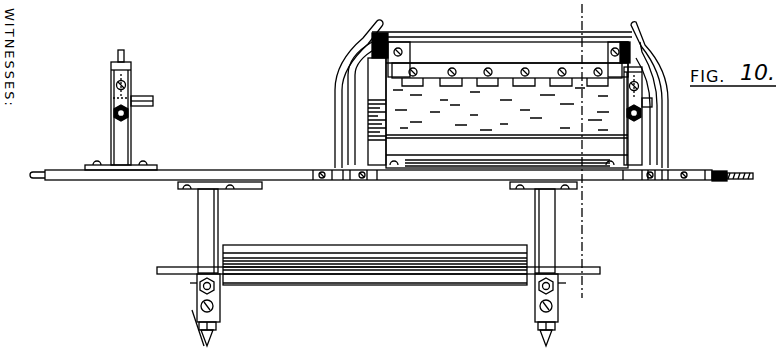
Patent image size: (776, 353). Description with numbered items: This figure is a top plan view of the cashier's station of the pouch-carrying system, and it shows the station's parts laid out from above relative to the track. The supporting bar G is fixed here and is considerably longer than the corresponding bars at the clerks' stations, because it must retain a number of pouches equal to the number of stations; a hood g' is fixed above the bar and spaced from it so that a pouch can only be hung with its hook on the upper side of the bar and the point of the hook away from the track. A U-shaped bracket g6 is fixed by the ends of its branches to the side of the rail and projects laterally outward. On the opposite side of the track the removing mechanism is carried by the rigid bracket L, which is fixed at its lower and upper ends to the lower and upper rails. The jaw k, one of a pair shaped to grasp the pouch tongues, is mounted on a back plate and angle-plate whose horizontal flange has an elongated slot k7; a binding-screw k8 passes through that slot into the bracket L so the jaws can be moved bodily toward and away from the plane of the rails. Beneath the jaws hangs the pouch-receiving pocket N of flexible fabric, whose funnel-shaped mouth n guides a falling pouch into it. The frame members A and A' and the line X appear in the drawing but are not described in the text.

The bed A is at (397, 162).
The bracket plate A' is at (377, 192).
The bar G is at (378, 302).
The hood g' is at (375, 265).
The U-shaped bracket g6 is at (538, 214).
The bracket L is at (340, 72).
The pouch-receiving pocket N is at (507, 105).
The funnel-shaped mouth n is at (507, 150).
The jaw k is at (418, 86).
The elongated slot k7 is at (408, 55).
The binding-screw k8 is at (400, 50).
The section line X is at (581, 158).